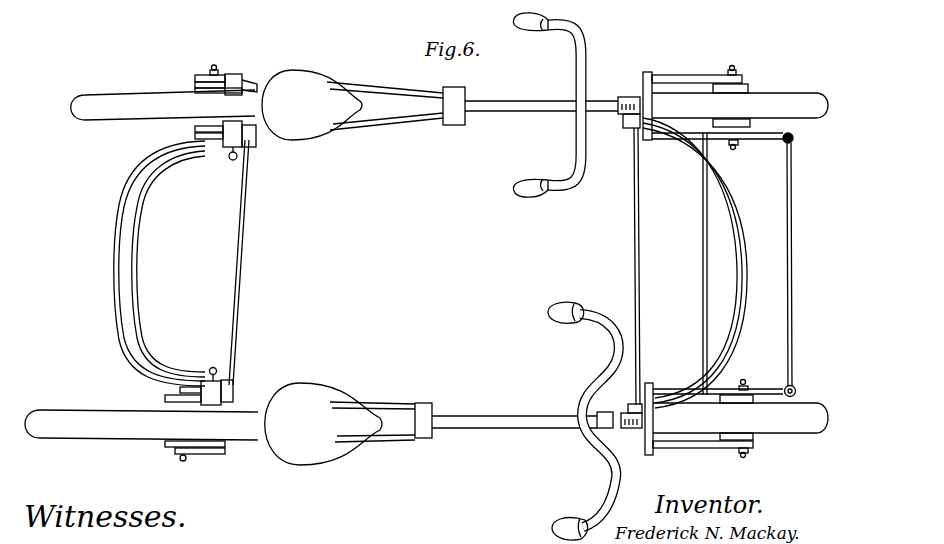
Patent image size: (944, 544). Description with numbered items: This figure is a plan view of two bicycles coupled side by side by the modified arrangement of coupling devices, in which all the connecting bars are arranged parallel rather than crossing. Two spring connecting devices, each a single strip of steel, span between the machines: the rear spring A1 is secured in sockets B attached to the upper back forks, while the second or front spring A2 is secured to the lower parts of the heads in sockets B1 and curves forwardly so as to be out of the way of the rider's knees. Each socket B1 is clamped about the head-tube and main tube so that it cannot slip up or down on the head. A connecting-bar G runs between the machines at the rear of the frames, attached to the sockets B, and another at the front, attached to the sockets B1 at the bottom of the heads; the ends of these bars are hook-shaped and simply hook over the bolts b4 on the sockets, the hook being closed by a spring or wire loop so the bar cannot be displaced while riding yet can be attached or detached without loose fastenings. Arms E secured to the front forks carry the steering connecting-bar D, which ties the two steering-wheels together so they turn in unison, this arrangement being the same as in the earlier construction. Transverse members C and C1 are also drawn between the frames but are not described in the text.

The rear spring connecting device A1 is at (159, 263).
The second spring connecting device A2 is at (737, 292).
The socket B is at (230, 142).
The socket B1 is at (627, 97).
The bolt b4 is at (256, 147).
The cross rod C is at (640, 252).
The cross rod C1 is at (702, 288).
The steering connecting-bar D is at (793, 300).
The arm E is at (768, 141).
The connecting-bar G is at (241, 238).